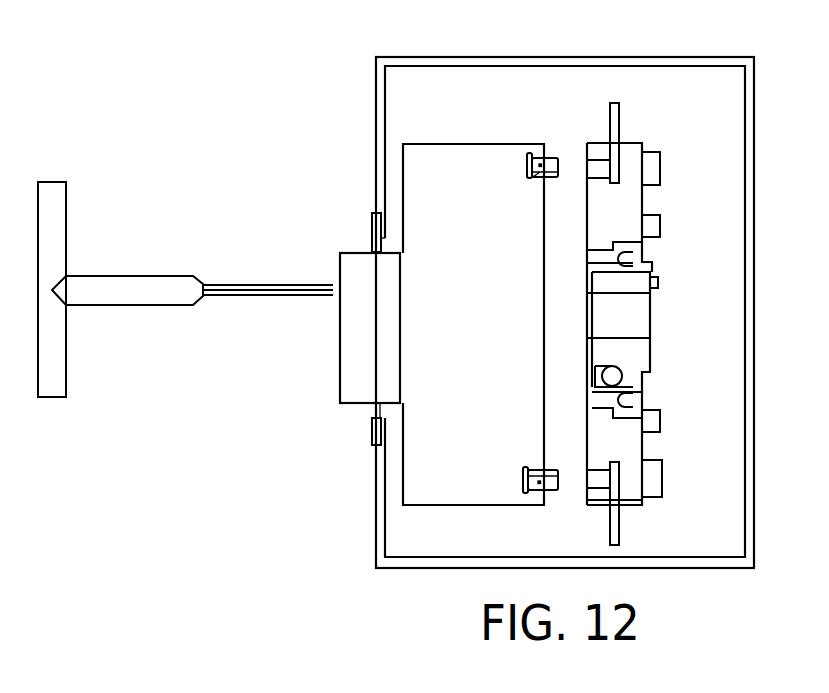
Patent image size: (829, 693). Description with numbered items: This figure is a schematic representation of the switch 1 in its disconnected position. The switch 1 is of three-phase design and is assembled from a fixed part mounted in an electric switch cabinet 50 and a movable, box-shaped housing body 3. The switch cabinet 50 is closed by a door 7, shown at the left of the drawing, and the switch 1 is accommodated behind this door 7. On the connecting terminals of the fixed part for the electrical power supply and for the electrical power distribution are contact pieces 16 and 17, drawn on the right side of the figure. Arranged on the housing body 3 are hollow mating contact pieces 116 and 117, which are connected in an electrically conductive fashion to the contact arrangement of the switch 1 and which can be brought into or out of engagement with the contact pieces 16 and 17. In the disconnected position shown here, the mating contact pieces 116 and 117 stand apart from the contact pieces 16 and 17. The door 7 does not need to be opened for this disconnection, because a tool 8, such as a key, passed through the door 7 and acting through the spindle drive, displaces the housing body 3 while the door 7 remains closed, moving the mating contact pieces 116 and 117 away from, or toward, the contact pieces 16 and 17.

The switch 1 is at (454, 52).
The housing body 3 is at (452, 408).
The door 7 is at (380, 120).
The tool 8 is at (108, 285).
The contact piece 16 is at (598, 172).
The contact piece 17 is at (602, 482).
The switch cabinet 50 is at (555, 117).
The mating contact piece 116 is at (537, 181).
The mating contact piece 117 is at (547, 490).